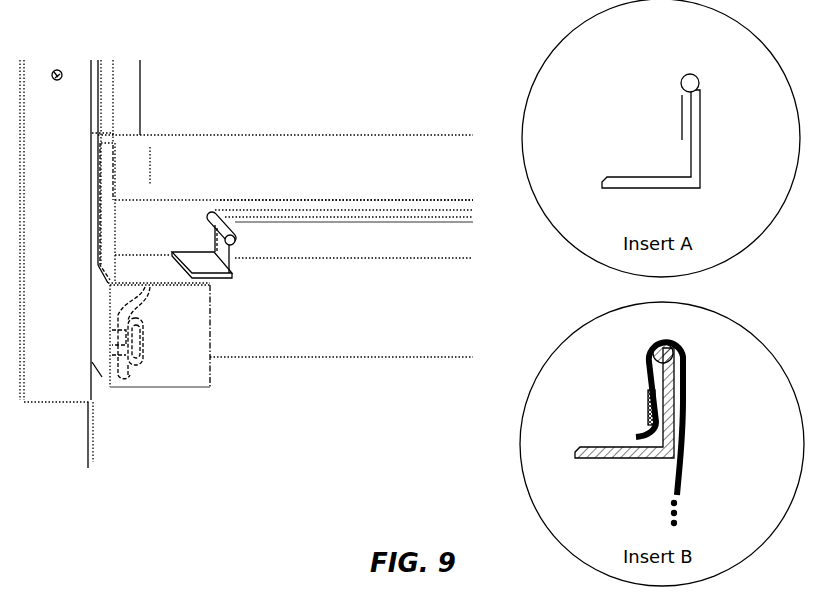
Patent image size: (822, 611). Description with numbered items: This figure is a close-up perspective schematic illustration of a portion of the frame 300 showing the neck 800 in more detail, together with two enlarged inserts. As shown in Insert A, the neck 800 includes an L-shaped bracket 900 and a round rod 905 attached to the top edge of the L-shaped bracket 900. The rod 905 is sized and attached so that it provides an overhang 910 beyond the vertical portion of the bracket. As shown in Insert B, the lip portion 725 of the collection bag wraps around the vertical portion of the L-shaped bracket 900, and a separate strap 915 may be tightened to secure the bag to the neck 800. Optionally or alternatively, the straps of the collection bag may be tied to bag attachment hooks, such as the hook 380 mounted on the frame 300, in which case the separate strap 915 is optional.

The frame 300 is at (128, 256).
The neck 800 is at (303, 212).
The L-shaped bracket 900 is at (237, 276).
The hook 380 is at (130, 315).
The round rod 905 is at (681, 85).
The overhang 910 is at (720, 130).
The lip portion 725 is at (688, 366).
The separate strap 915 is at (648, 407).